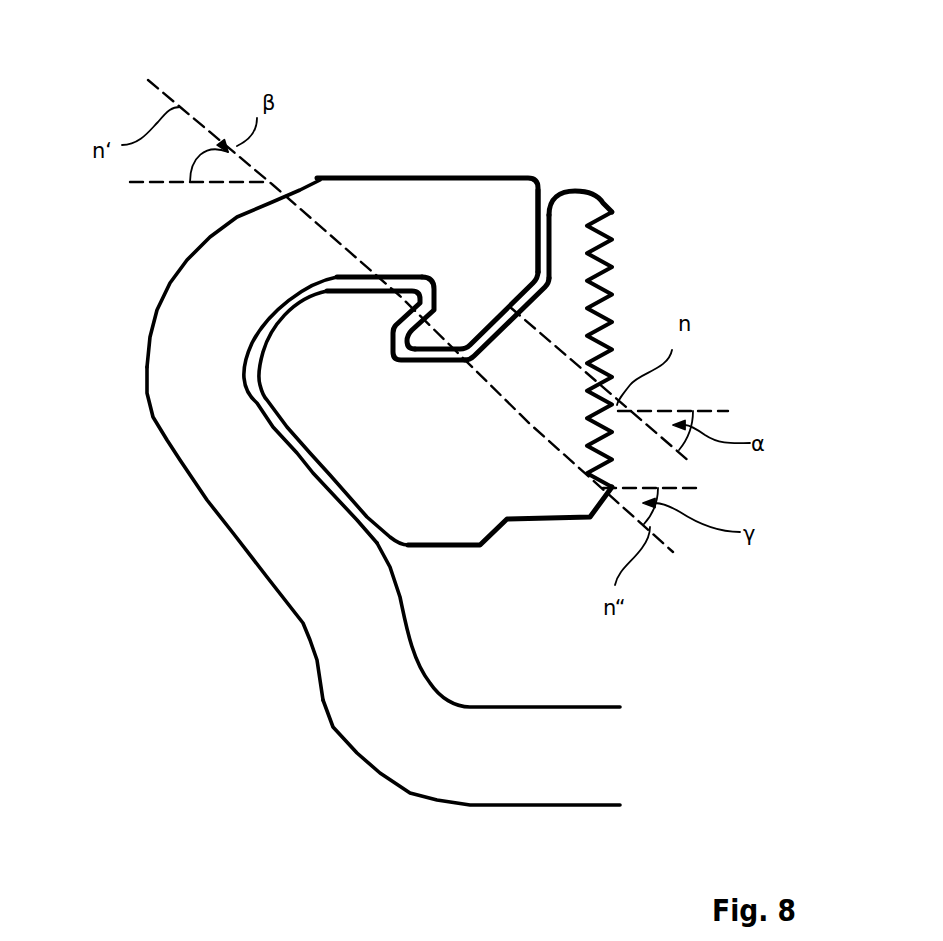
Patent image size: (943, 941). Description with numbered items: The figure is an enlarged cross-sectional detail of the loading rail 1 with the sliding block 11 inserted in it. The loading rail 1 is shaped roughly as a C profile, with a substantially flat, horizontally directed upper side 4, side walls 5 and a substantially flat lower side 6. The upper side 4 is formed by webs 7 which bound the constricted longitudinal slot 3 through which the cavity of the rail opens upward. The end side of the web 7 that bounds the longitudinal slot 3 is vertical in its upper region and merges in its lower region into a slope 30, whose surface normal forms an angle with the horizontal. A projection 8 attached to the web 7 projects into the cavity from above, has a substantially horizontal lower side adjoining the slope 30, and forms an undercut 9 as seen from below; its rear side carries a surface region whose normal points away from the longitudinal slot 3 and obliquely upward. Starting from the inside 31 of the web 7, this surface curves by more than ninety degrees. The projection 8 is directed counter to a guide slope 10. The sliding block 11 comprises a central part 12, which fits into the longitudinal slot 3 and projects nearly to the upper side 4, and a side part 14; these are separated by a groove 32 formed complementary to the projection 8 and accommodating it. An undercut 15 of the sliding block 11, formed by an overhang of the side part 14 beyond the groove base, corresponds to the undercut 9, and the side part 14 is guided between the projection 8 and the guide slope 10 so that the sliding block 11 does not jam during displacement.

The loading rail 1 is at (125, 248).
The longitudinal slot 3 is at (592, 157).
The upper side 4 is at (378, 178).
The side walls 5 is at (318, 570).
The lower side 6 is at (526, 806).
The web 7 is at (422, 212).
The projection 8 is at (462, 313).
The undercut 9 is at (430, 290).
The guide slope 10 is at (313, 467).
The sliding block 11 is at (657, 283).
The central part 12 is at (507, 502).
The side part 14 is at (318, 397).
The undercut 15 is at (390, 310).
The slope 30 is at (530, 287).
The inside of the web 31 is at (397, 273).
The groove 32 is at (510, 398).